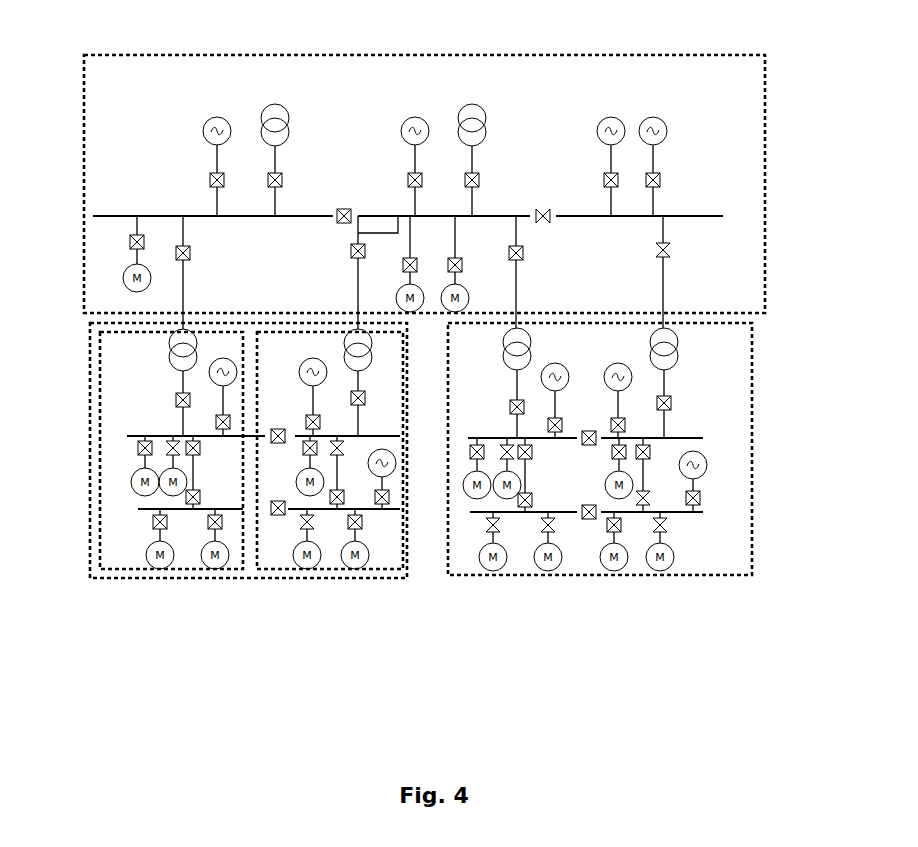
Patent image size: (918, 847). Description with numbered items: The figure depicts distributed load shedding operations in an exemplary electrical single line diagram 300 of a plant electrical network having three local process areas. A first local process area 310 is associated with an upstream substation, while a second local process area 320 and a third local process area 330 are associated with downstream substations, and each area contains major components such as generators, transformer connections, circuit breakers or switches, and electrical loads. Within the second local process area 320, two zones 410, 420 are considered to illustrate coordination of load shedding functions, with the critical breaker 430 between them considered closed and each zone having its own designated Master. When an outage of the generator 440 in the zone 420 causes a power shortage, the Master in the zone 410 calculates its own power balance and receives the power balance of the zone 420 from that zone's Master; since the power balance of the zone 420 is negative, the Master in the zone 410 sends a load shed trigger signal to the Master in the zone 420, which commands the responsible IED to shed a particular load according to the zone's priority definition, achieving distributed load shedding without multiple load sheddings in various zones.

The single line diagram 300 is at (160, 598).
The first local process area 310 is at (768, 115).
The second local process area 320 is at (88, 482).
The third local process area 330 is at (765, 398).
The zone 410 is at (106, 573).
The zone 420 is at (400, 555).
The critical breaker 430 is at (278, 447).
The generator 440 is at (330, 372).